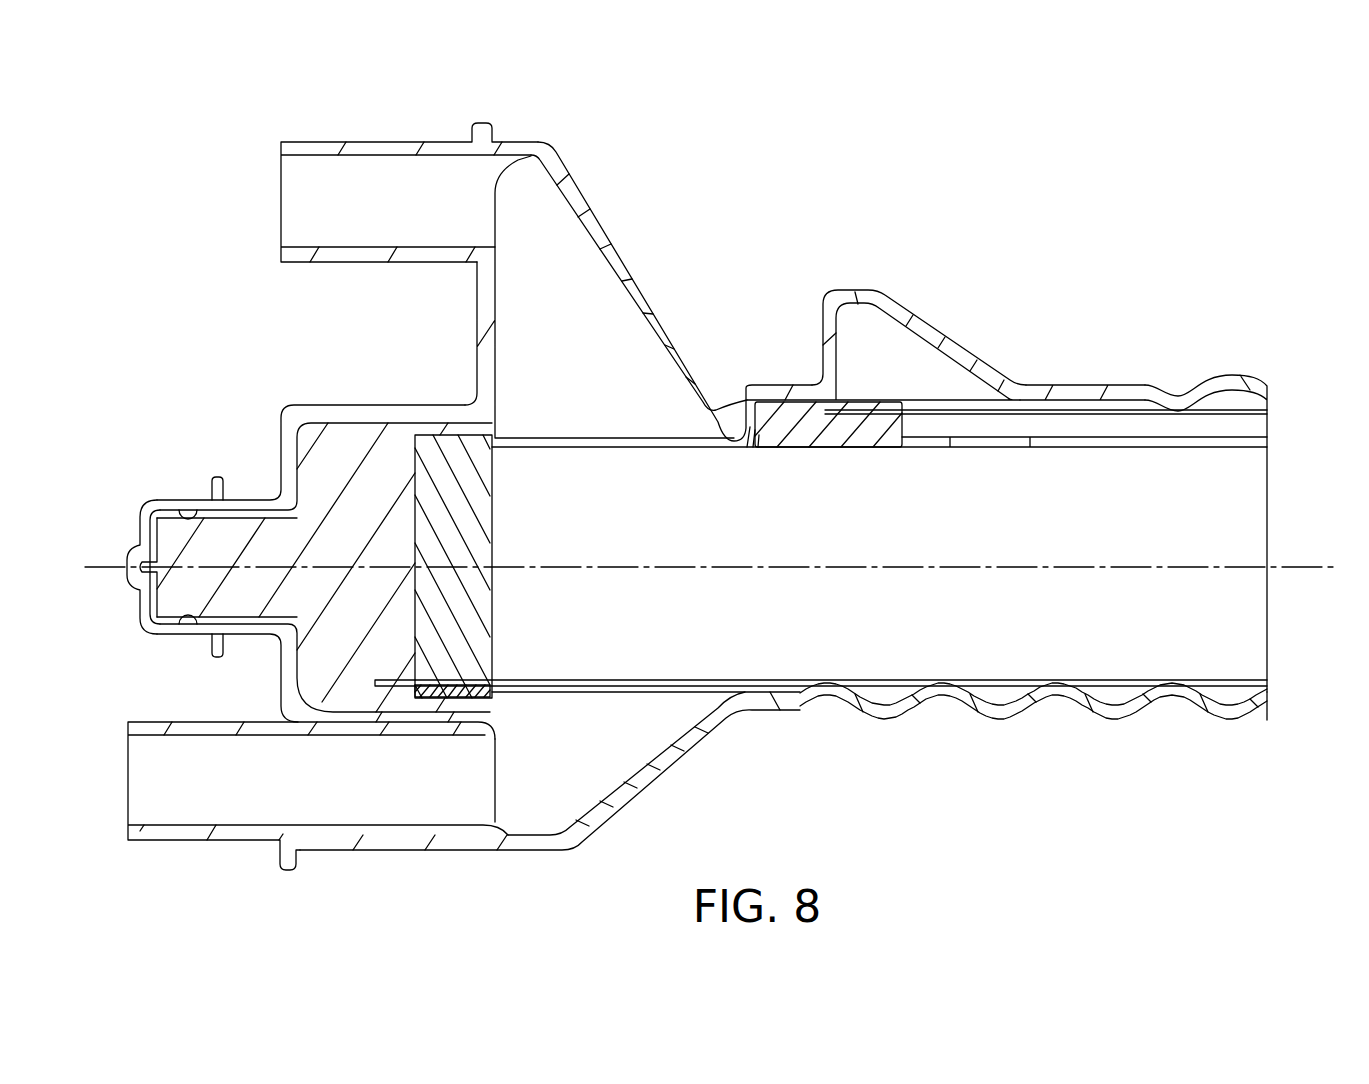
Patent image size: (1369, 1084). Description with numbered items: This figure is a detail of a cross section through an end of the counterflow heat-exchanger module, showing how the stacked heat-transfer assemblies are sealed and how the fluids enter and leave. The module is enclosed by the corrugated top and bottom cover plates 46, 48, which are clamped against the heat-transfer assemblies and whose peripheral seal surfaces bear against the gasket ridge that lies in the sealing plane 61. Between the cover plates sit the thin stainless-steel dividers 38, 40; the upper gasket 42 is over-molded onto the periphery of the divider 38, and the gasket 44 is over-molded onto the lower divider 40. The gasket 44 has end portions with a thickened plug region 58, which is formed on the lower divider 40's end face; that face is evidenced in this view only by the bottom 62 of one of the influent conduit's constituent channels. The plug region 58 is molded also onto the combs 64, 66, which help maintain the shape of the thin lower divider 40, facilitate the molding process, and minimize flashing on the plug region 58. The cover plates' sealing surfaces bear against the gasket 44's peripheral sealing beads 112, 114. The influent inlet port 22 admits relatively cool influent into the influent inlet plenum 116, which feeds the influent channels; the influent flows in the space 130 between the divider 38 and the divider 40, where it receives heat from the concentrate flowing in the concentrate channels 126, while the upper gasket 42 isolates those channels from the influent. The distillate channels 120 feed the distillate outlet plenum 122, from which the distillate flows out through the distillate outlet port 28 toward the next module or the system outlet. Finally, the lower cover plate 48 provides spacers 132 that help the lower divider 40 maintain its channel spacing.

The influent inlet port 22 is at (323, 263).
The distillate outlet port 28 is at (168, 842).
The divider 38 is at (1020, 408).
The lower divider 40 is at (545, 679).
The upper gasket 42 is at (813, 449).
The gasket 44 is at (493, 430).
The top cover plate 46 is at (841, 175).
The bottom cover plate 48 is at (830, 783).
The plug region 58 is at (358, 433).
The sealing plane 61 is at (1305, 572).
The bottom of influent channel 62 is at (393, 687).
The comb 64 is at (452, 445).
The comb 66 is at (462, 699).
The peripheral sealing bead 112 is at (190, 505).
The peripheral sealing bead 114 is at (190, 629).
The influent inlet plenum 116 is at (545, 277).
The distillate channels 120 is at (864, 369).
The distillate outlet plenum 122 is at (545, 766).
The concentrate channels 126 is at (1067, 398).
The space between dividers 130 is at (1135, 420).
The spacers 132 is at (1110, 690).